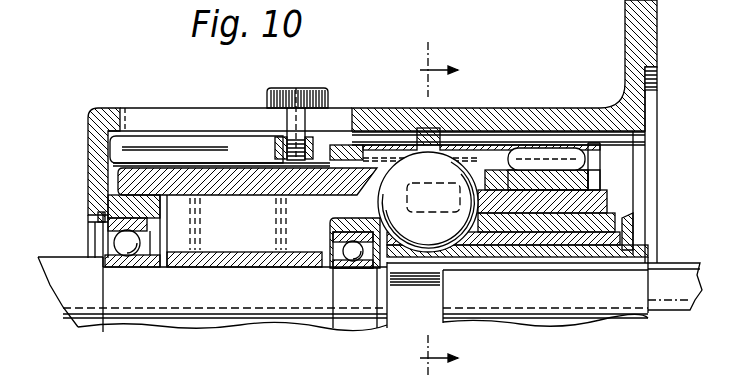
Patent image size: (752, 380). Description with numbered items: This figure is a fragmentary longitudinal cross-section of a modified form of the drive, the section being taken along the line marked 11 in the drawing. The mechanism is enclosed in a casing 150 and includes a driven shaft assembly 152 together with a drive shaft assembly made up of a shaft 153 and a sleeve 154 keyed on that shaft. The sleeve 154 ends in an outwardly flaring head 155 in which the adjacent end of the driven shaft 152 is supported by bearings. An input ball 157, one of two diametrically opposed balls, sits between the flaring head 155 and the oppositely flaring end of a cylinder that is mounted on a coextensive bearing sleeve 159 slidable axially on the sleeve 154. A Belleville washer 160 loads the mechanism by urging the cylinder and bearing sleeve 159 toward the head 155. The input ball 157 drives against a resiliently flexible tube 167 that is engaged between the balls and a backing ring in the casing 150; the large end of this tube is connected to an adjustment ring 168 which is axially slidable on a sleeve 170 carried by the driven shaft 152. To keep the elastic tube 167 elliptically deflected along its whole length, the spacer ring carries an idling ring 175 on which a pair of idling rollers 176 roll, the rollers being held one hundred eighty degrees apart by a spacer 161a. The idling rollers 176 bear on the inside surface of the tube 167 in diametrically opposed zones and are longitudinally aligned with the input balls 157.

The section line 11- 11 is at (427, 208).
The casing 150 is at (550, 97).
The driven shaft assembly 152 is at (67, 267).
The shaft 153 is at (593, 308).
The sleeve 154 is at (647, 250).
The outwardly flaring head 155 is at (330, 228).
The input ball 157 is at (428, 202).
The bearing sleeve 159 is at (588, 243).
The Belleville washer 160 is at (633, 223).
The spacer 161a is at (485, 148).
The resiliently flexible tube 167 is at (378, 150).
The adjustment ring 168 is at (280, 160).
The sleeve 170 is at (293, 88).
The idling ring 175 is at (588, 183).
The idling roller 176 is at (556, 152).